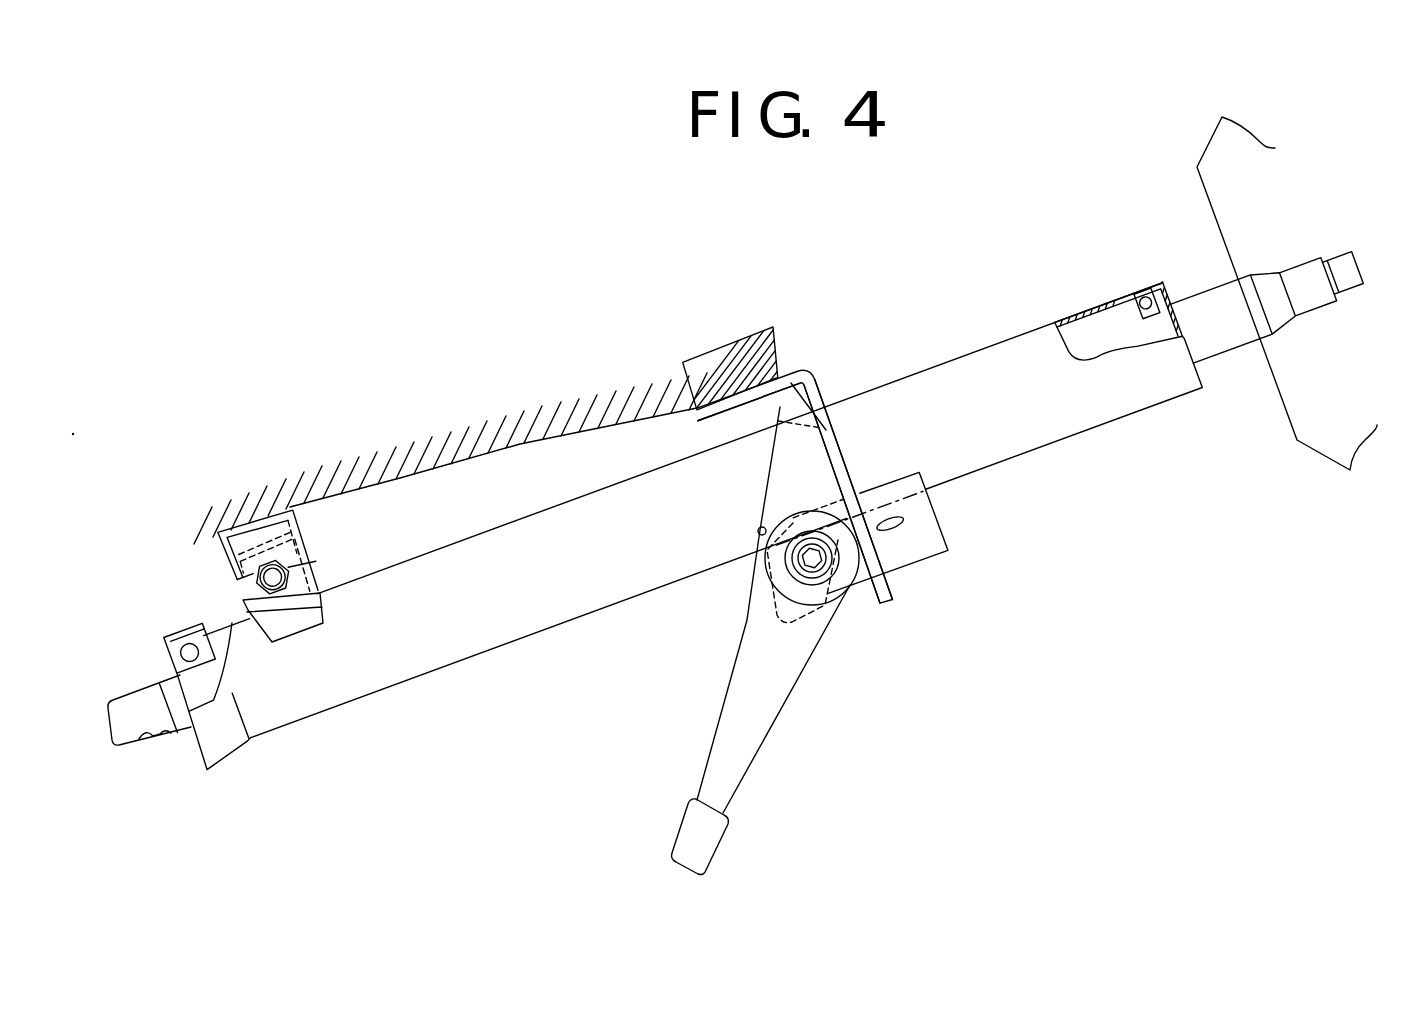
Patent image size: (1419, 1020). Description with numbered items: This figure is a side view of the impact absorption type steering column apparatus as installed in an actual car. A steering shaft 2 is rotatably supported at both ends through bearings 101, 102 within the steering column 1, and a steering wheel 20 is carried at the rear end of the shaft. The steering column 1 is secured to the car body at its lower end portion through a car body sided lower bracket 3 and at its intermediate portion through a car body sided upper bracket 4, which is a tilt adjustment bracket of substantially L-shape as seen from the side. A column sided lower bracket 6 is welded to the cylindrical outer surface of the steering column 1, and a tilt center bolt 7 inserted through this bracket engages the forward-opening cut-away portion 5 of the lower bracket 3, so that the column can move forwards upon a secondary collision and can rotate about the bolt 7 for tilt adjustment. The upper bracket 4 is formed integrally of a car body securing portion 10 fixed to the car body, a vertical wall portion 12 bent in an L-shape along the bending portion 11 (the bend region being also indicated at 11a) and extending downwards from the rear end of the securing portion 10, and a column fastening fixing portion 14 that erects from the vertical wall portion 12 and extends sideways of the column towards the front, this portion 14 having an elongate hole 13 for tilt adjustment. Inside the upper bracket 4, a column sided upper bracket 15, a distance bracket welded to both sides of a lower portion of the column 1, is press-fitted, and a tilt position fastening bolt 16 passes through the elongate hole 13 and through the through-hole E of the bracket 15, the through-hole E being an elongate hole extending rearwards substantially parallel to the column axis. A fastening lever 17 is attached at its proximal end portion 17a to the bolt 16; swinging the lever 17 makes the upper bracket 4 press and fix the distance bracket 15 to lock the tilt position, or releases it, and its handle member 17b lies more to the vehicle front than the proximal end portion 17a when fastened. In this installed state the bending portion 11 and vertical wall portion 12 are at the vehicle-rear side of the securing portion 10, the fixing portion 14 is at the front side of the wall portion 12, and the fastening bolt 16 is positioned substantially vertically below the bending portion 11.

The steering column 1 is at (1010, 330).
The steering shaft 2 is at (1201, 296).
The car body sided lower bracket 3 is at (306, 545).
The car body sided upper bracket 4 is at (860, 327).
The cut-away portion 5 is at (246, 588).
The column sided lower bracket 6 is at (285, 626).
The tilt center bolt 7 is at (300, 577).
The car body securing portion 10 is at (718, 350).
The bending portion 11 is at (806, 366).
The mounting portion of upper bracket 11a is at (752, 414).
The vertical wall portion 12 is at (848, 446).
The elongate hole for tilt adjustment 13 is at (812, 592).
The column fastening fixing portion 14 is at (772, 482).
The column sided upper bracket 15 is at (950, 552).
The tilt position fastening bolt 16 is at (849, 599).
The fastening lever 17 is at (747, 640).
The proximal end portion 17a is at (761, 531).
The handle member 17b is at (682, 826).
The steering wheel 20 is at (1277, 393).
The bearing 101 is at (1143, 296).
The bearing 102 is at (184, 640).
The through-hole E is at (906, 521).